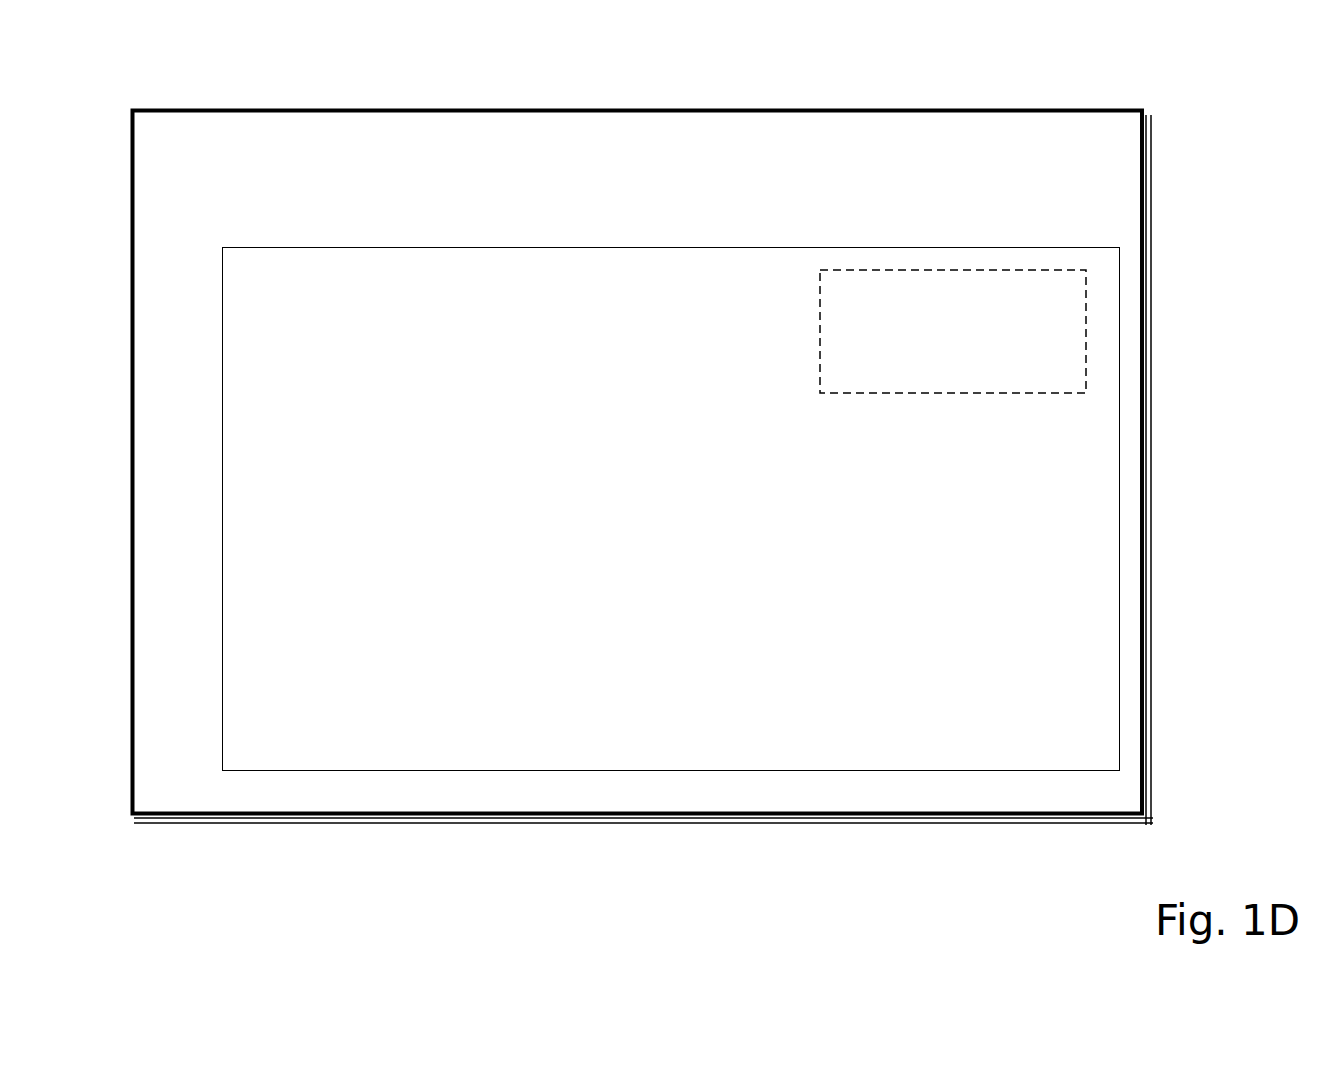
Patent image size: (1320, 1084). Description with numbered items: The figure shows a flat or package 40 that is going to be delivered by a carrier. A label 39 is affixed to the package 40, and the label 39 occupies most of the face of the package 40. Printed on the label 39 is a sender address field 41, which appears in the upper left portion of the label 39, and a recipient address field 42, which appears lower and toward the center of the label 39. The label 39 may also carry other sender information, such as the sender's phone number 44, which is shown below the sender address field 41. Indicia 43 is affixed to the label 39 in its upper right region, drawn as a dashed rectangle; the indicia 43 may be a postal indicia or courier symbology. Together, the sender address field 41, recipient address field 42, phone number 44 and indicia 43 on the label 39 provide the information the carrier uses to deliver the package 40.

The label 39 is at (293, 245).
The package 40 is at (333, 110).
The sender address field 41 is at (257, 270).
The recipient address field 42 is at (542, 585).
The indicia 43 is at (1085, 288).
The sender's phone number 44 is at (407, 415).